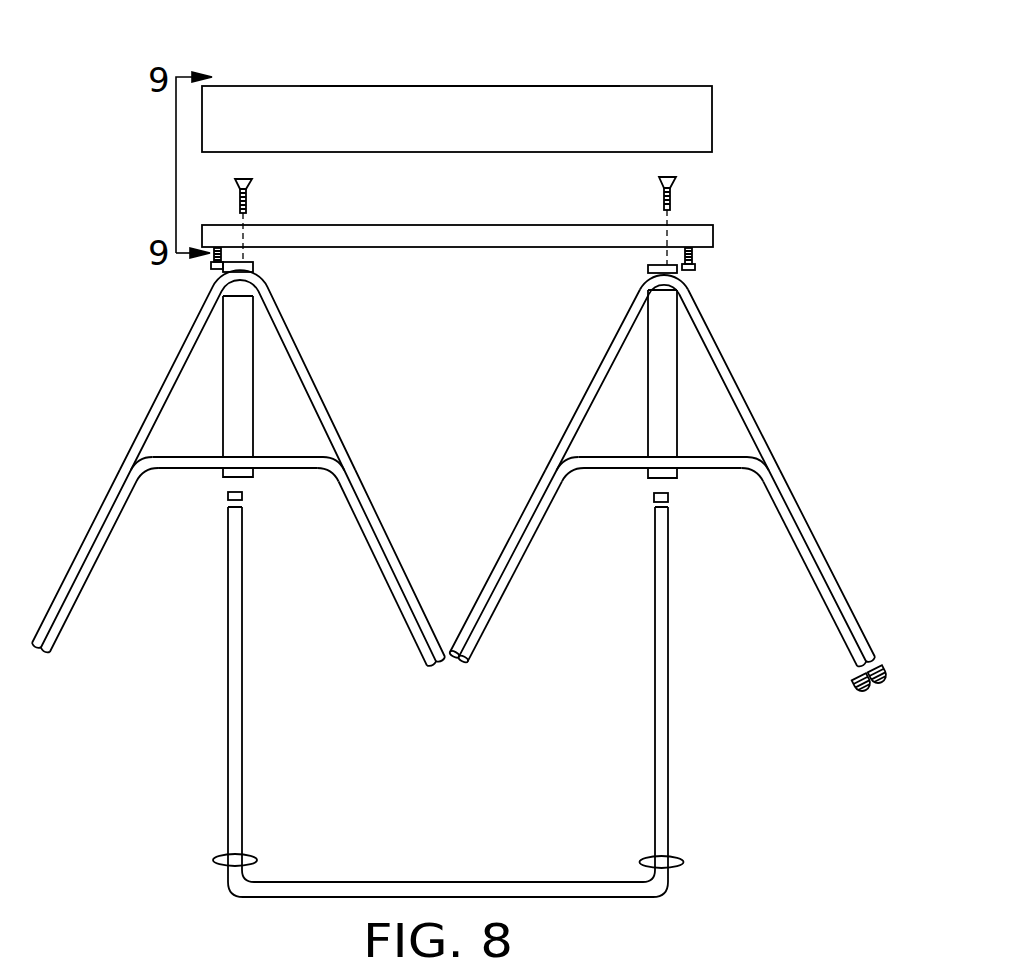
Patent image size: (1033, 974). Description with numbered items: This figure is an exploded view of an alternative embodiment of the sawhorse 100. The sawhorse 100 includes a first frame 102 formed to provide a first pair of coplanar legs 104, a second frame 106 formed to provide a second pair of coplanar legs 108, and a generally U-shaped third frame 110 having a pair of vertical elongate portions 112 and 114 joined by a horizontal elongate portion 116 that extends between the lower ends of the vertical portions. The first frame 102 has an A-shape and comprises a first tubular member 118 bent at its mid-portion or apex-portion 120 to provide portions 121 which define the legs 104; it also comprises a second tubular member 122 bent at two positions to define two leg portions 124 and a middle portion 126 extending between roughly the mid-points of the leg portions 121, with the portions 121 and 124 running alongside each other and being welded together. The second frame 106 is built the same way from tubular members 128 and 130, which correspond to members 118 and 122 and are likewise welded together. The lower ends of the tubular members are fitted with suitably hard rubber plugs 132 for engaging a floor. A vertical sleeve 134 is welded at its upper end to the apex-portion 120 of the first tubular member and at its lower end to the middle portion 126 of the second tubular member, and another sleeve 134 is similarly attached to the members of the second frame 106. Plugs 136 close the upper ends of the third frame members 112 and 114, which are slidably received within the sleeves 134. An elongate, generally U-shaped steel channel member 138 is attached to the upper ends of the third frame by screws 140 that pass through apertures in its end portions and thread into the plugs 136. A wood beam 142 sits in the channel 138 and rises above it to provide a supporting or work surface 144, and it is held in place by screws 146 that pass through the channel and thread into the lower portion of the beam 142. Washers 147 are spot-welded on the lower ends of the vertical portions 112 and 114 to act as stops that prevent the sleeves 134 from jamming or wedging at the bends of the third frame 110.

The sawhorse 100 is at (758, 212).
The first frame 102 is at (664, 459).
The first pair of coplanar legs 104 is at (555, 448).
The second frame 106 is at (283, 300).
The second pair of coplanar legs 108 is at (373, 500).
The third frame 110 is at (232, 892).
The vertical elongate portion 112 is at (668, 663).
The vertical elongate portion 114 is at (243, 755).
The horizontal elongate portion 116 is at (563, 898).
The first tubular member 118 is at (686, 361).
The apex-portion 120 is at (640, 292).
The leg portions of first tubular member 121 is at (590, 377).
The second tubular member 122 is at (573, 473).
The leg portions of second tubular member 124 is at (507, 613).
The middle portion 126 is at (718, 472).
The tubular member 128 is at (322, 392).
The tubular member 130 is at (390, 607).
The rubber plugs 132 is at (443, 662).
The vertical sleeve 134 is at (223, 402).
The plugs 136 is at (245, 494).
The channel member 138 is at (453, 247).
The screws 140 is at (252, 198).
The wood beam 142 is at (501, 138).
The work surface 144 is at (410, 86).
The screws 146 is at (210, 268).
The washers 147 is at (258, 860).